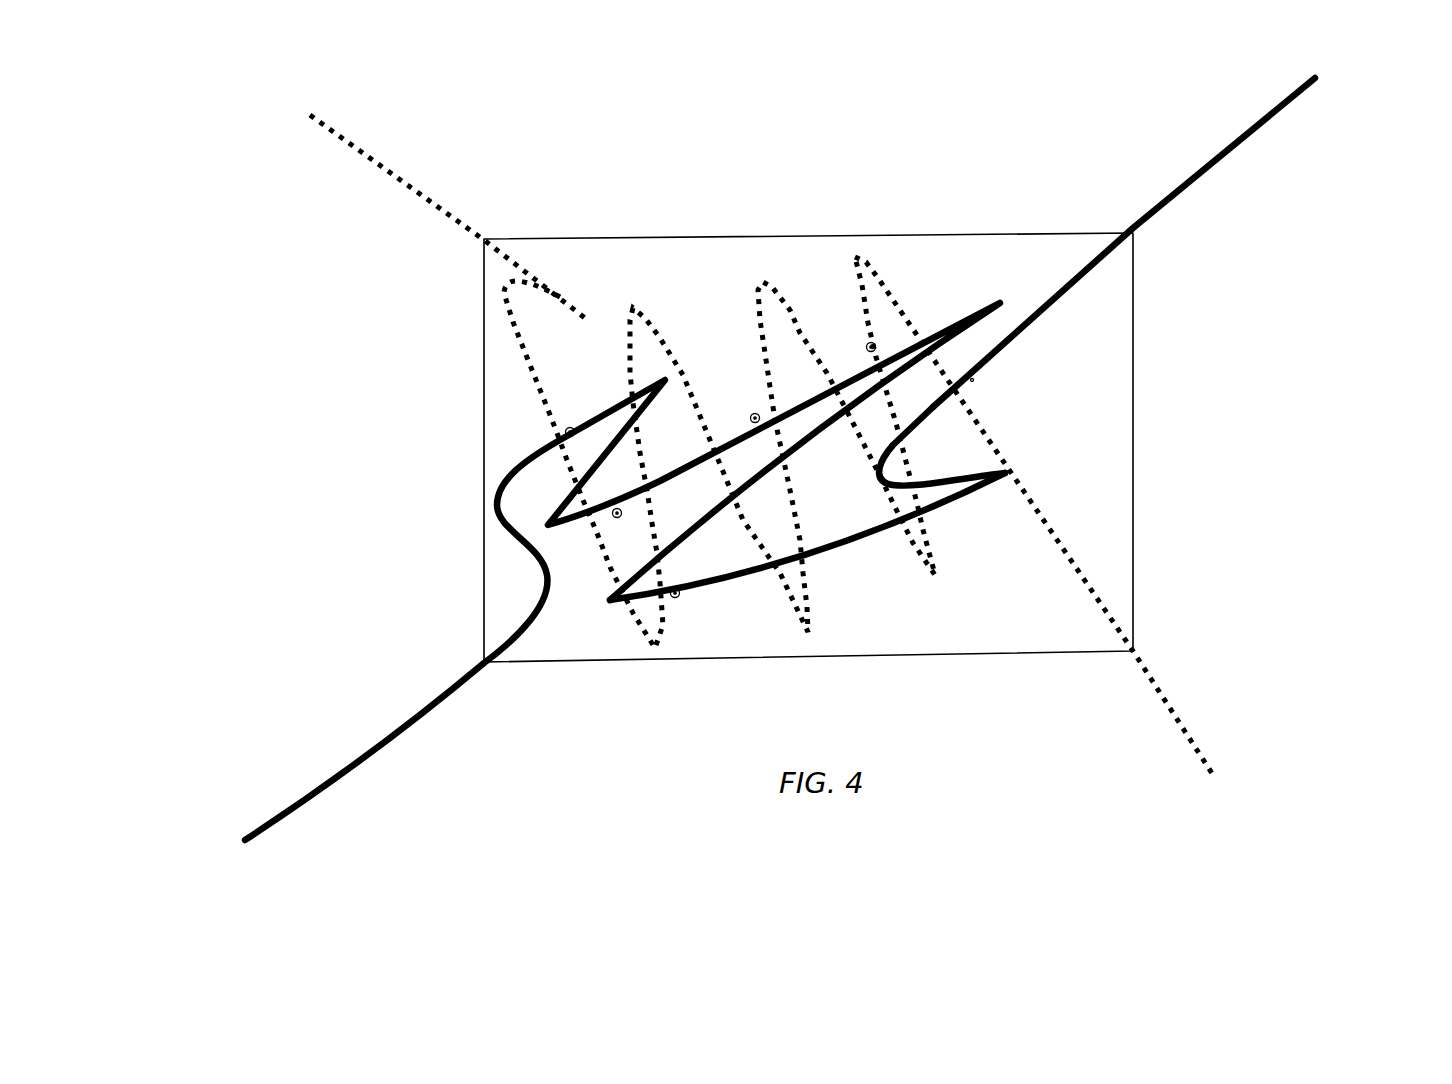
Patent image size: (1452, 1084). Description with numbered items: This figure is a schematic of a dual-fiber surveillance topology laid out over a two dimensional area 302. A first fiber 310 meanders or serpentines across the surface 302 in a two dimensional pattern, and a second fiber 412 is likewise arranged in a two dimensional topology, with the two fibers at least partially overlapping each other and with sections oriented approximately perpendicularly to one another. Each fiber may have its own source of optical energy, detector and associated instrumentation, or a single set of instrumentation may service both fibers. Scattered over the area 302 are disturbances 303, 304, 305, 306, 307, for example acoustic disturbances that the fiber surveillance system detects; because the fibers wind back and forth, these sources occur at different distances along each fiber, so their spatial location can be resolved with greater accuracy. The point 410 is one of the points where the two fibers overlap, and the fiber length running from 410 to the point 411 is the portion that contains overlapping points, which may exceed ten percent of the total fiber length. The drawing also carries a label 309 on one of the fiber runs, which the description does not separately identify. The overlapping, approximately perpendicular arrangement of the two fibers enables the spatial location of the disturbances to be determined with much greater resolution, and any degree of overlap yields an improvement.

The two dimensional area 302 is at (1133, 444).
The disturbance 303 is at (849, 339).
The disturbance 304 is at (739, 405).
The disturbance 305 is at (618, 529).
The disturbance 306 is at (559, 420).
The disturbance 307 is at (687, 610).
The coil segment 309 is at (806, 553).
The fiber 310 is at (1248, 159).
The overlap point 410 is at (972, 385).
The overlap end point 411 is at (545, 437).
The fiber 412 is at (1222, 781).